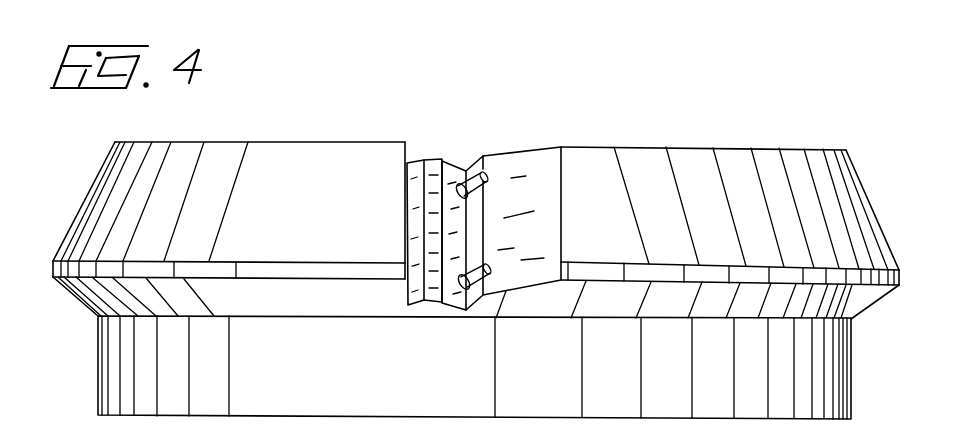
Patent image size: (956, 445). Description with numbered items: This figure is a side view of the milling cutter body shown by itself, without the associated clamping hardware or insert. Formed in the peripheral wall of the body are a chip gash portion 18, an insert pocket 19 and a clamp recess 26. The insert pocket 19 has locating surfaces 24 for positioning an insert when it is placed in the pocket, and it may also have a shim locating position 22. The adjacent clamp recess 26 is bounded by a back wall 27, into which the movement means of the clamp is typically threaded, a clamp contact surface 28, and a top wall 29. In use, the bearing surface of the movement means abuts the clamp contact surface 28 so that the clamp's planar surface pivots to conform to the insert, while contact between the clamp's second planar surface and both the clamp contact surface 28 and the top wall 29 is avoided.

The chip gash portion 18 is at (532, 170).
The insert pocket 19 is at (449, 220).
The shim locating position 22 is at (417, 303).
The locating surfaces 24 is at (436, 297).
The clamp recess 26 is at (490, 325).
The back wall 27 is at (452, 168).
The clamp contact surface 28 is at (486, 163).
The top wall 29 is at (470, 247).